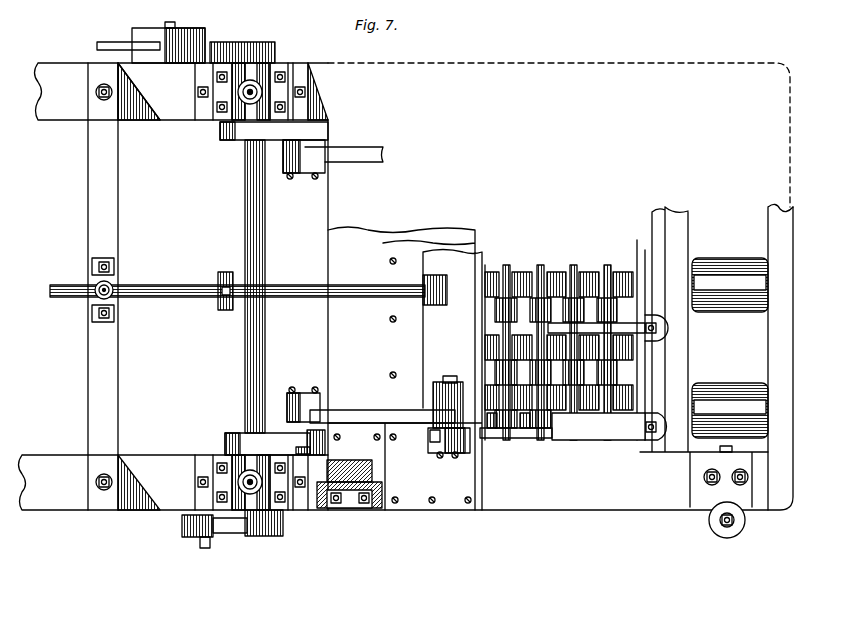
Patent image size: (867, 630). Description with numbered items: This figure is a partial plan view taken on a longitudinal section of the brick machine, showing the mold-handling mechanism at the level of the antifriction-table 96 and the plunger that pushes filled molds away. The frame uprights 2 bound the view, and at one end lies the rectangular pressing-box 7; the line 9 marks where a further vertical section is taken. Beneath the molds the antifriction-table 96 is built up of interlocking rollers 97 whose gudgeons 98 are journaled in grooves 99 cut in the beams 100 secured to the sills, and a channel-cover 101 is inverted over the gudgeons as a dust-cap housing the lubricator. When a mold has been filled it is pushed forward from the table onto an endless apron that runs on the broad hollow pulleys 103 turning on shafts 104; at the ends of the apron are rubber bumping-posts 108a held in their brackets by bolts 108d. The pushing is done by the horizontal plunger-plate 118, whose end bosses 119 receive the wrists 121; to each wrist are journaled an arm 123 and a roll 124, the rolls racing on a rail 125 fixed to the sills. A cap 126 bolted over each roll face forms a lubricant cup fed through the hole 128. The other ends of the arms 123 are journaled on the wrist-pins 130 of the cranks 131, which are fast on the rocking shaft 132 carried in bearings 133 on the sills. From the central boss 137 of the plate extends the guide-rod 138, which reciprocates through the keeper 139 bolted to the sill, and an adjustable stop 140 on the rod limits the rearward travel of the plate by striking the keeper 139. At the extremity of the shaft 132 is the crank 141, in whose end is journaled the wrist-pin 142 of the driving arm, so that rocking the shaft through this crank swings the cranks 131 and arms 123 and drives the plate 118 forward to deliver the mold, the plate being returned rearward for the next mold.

The uprights 2 is at (176, 114).
The pressing-box 7 is at (165, 458).
The section line 9 9 is at (487, 287).
The antifriction-table 96 is at (565, 340).
The interlocking rollers 97 is at (616, 272).
The gudgeons 98 is at (537, 432).
The grooves 99 is at (495, 432).
The beams 100 is at (548, 433).
The channel-cover 101 is at (573, 426).
The broad pulleys 103 is at (717, 385).
The shafts 104 is at (770, 404).
The bumping-posts 108a is at (733, 528).
The bolts 108d is at (720, 521).
The plunger-plate 118 is at (399, 368).
The bosses 119 is at (438, 395).
The wrists 121 is at (448, 380).
The arms 123 is at (344, 151).
The rolls 124 is at (418, 445).
The rail 125 is at (430, 434).
The cap 126 is at (436, 460).
The hole 128 is at (452, 458).
The wrist-pins 130 is at (310, 451).
The cranks 131 is at (228, 134).
The shaft 132 is at (262, 357).
The bearings 133 is at (270, 70).
The boss 137 is at (436, 305).
The guide-rod 138 is at (342, 288).
The keeper 139 is at (118, 287).
The stop 140 is at (225, 274).
The crank 141 is at (257, 528).
The wrist-pin 142 is at (200, 544).